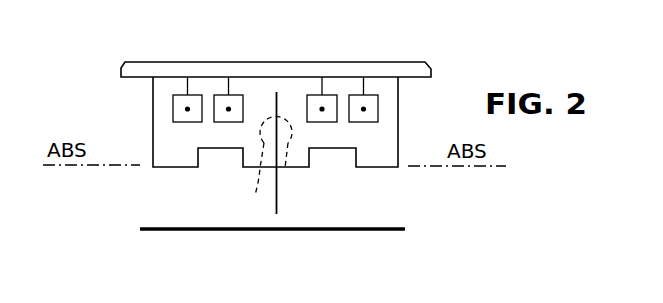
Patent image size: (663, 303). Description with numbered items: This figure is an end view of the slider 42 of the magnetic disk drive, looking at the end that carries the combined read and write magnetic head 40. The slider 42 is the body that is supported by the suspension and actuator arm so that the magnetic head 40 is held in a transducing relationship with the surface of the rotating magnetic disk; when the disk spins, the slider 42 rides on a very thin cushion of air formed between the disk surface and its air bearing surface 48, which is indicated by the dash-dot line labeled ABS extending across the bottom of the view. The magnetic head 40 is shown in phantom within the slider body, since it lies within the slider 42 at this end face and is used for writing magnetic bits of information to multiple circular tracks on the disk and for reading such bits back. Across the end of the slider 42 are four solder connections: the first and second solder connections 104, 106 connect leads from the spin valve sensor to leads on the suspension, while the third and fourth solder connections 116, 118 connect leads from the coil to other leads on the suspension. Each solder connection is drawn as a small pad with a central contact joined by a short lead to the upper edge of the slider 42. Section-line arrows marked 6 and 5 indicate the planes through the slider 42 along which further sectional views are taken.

The slider 42 is at (153, 106).
The first solder connection 104 is at (173, 96).
The third solder connection 116 is at (214, 96).
The fourth solder connection 118 is at (307, 96).
The second solder connection 106 is at (350, 96).
The air bearing surface (ABS) 48 is at (72, 168).
The combined read and write magnetic head 40 is at (256, 194).
The plane 6- 6 is at (277, 103).
The plane 5- 5 is at (160, 232).